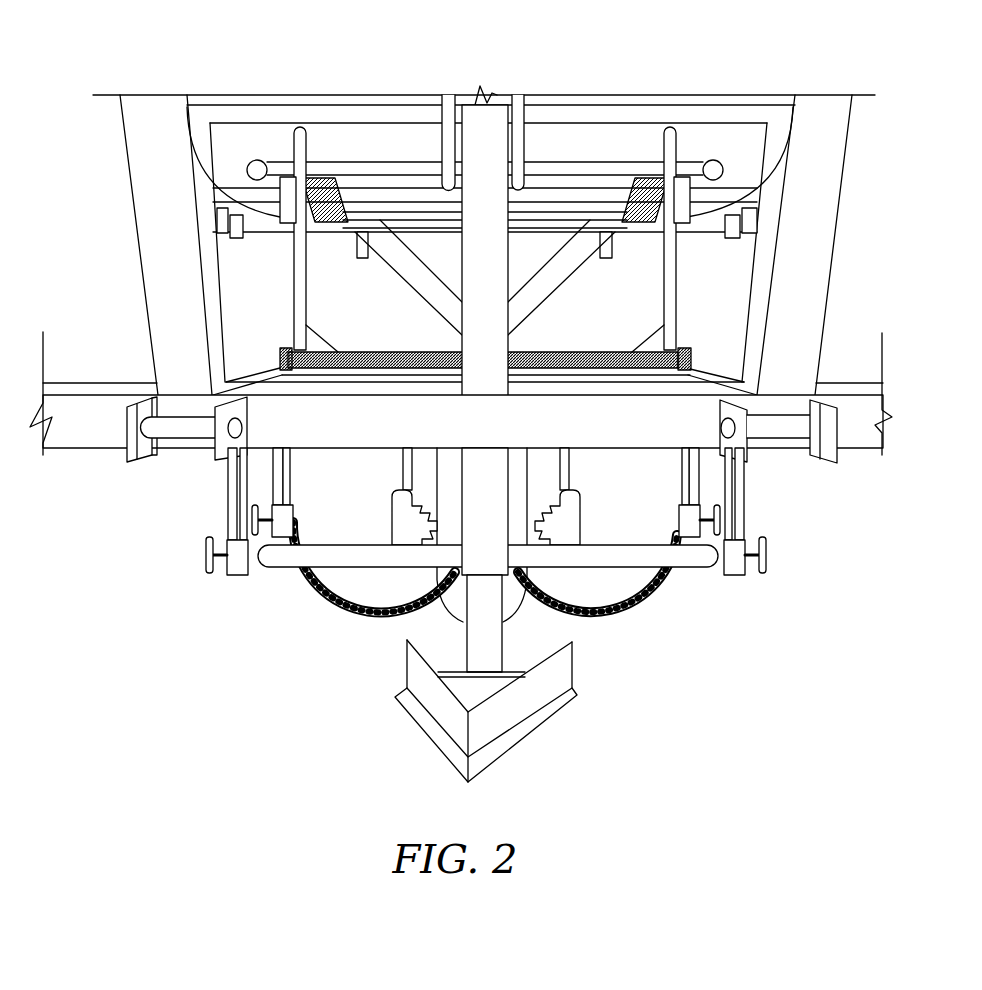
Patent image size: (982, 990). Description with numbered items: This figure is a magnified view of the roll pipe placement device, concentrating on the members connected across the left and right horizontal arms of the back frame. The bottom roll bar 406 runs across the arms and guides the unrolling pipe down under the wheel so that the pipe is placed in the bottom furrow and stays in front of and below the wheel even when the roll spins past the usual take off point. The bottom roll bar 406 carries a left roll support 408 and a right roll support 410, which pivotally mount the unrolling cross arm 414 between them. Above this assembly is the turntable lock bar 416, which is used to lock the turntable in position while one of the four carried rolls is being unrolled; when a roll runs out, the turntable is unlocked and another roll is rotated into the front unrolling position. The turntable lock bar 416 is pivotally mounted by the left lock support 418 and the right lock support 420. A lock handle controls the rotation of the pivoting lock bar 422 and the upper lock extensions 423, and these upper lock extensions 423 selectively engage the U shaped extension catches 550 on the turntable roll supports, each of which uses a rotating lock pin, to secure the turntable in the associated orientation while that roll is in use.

The U shaped extension catch 550 is at (218, 122).
The bottom roll bar 406 is at (282, 570).
The left roll support 408 is at (228, 500).
The right roll support 410 is at (742, 503).
The unrolling cross arm 414 is at (268, 572).
The turntable lock bar 416 is at (566, 347).
The left lock support 418 is at (283, 347).
The right lock support 420 is at (684, 347).
The pivoting lock bar 422 is at (558, 302).
The upper lock extension 423 is at (676, 276).